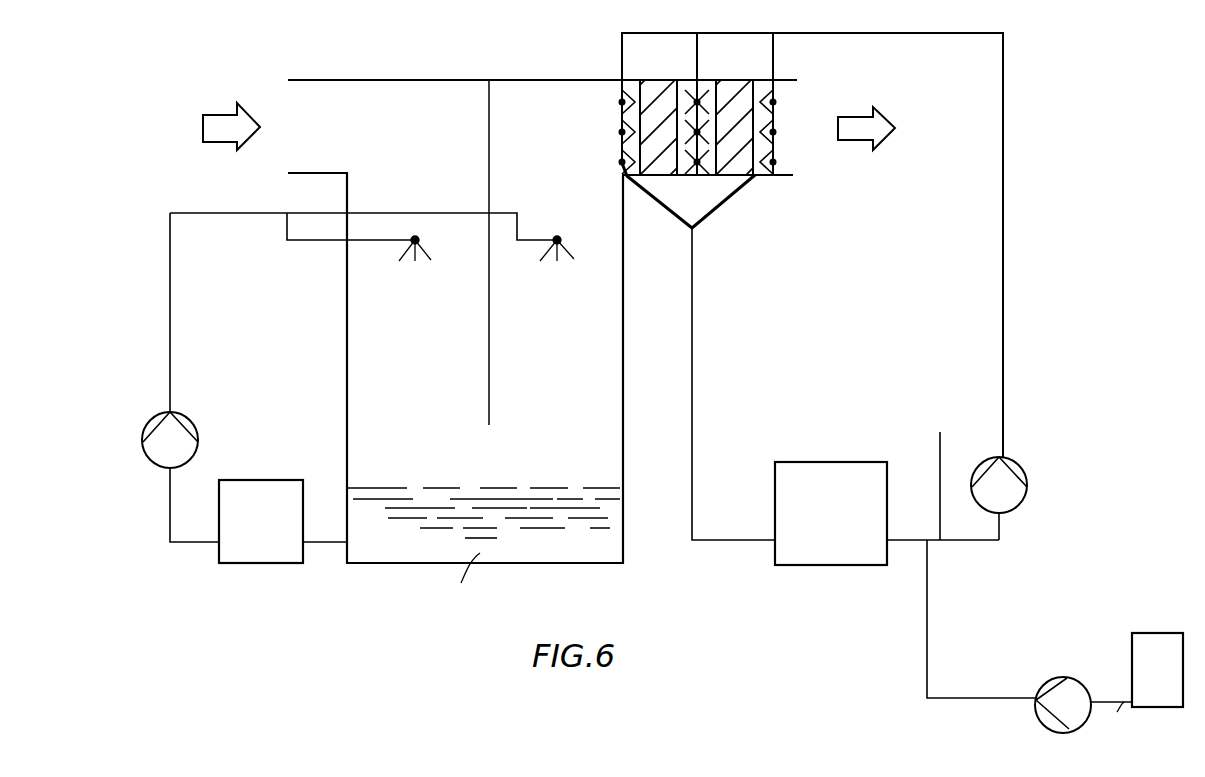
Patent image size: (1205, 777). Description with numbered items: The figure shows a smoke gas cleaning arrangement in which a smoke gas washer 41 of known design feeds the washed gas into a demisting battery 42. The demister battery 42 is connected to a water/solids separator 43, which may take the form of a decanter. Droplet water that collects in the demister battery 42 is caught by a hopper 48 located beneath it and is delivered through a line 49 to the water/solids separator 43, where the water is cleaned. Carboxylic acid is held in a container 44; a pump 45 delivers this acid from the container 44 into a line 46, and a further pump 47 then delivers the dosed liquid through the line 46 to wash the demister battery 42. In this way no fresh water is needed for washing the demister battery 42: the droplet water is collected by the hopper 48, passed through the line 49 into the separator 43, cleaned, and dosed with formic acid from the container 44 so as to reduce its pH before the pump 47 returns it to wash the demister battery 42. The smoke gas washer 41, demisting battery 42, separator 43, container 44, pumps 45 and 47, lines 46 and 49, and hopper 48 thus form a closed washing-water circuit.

The smoke gas washer 41 is at (415, 552).
The demisting battery 42 is at (667, 167).
The water/solids separator 43 is at (797, 553).
The container 44 is at (1157, 640).
The pump 45 is at (1067, 680).
The line 46 is at (999, 442).
The pump 47 is at (1010, 495).
The hopper 48 is at (697, 210).
The line 49 is at (692, 428).